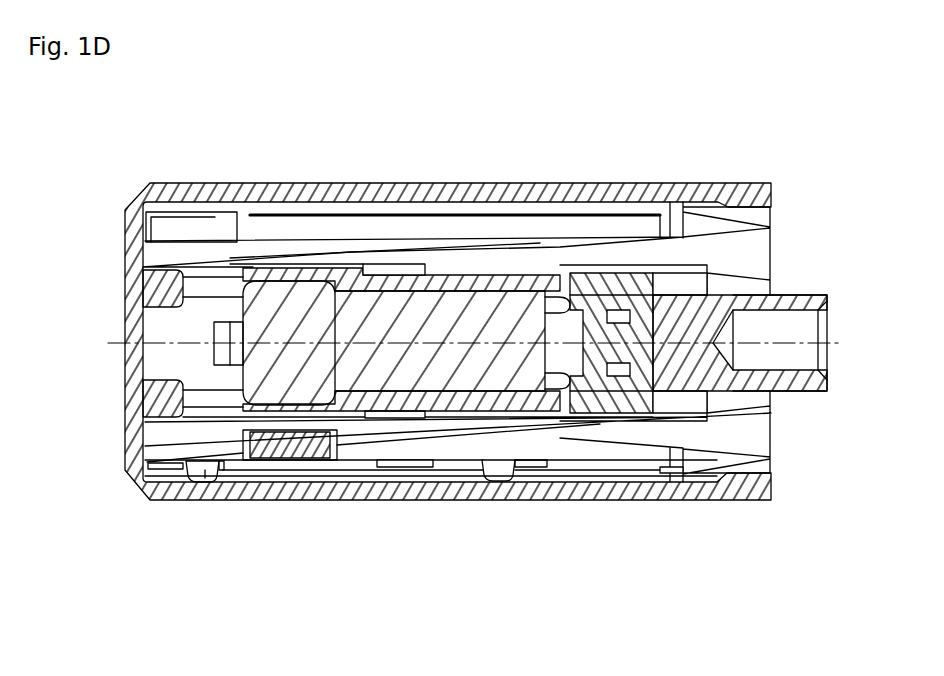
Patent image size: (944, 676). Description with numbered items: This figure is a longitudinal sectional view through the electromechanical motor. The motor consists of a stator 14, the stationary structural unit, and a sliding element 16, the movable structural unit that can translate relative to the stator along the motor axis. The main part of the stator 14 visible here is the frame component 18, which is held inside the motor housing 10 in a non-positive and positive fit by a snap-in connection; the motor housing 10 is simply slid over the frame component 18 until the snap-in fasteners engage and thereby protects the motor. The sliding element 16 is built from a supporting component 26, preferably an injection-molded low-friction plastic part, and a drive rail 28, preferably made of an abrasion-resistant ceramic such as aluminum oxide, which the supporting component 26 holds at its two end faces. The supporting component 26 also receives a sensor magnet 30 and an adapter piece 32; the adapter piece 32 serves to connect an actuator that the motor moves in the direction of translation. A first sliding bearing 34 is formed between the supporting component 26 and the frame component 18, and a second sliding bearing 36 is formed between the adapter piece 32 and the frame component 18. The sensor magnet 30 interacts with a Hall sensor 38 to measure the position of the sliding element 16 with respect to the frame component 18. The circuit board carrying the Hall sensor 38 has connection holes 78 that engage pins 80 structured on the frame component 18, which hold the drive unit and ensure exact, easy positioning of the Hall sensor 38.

The motor housing 10 is at (723, 193).
The stator 14 is at (183, 233).
The sliding element 16 is at (254, 262).
The frame component 18 is at (322, 262).
The supporting component 26 is at (400, 285).
The drive rail 28 is at (433, 312).
The sensor magnet 30 is at (243, 404).
The adapter piece 32 is at (678, 322).
The first sliding bearing 34 is at (284, 262).
The second sliding bearing 36 is at (763, 283).
The Hall sensor 38 is at (292, 452).
The connection holes 78 is at (188, 482).
The pins 80 is at (205, 471).